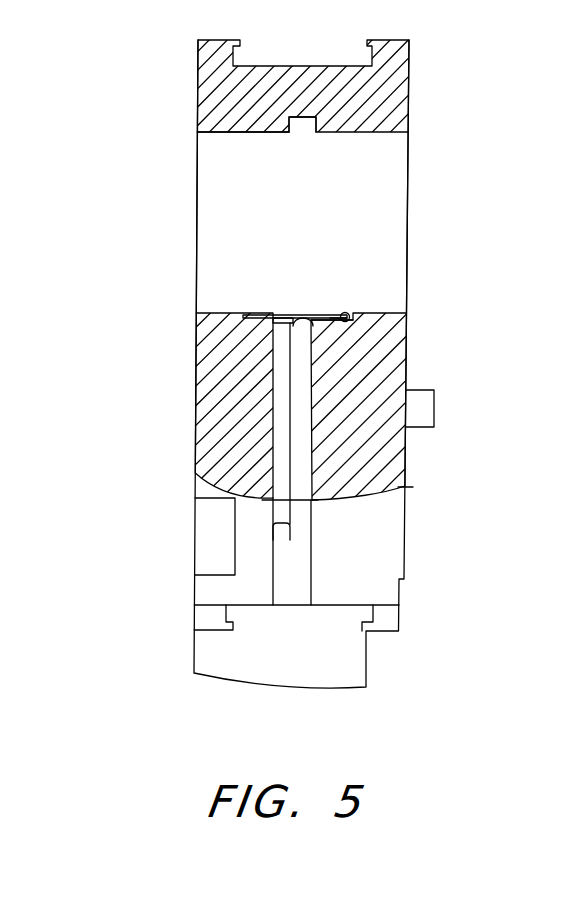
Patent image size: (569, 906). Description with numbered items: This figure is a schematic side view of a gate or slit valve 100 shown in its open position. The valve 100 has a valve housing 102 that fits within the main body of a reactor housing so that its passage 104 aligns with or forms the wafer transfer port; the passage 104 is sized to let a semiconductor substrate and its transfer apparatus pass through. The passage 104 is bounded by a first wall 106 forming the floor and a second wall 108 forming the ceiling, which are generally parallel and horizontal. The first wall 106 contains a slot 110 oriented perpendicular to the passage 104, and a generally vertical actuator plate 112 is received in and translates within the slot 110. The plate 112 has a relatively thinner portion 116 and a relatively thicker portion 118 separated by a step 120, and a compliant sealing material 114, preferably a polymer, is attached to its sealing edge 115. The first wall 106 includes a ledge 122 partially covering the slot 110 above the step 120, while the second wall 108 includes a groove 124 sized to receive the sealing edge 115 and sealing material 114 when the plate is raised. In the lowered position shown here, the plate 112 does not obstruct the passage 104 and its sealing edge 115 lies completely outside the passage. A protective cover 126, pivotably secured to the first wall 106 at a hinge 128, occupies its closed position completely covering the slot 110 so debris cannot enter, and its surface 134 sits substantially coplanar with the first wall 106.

The slit valve 100 is at (90, 117).
The valve housing 102 is at (411, 100).
The passage 104 is at (362, 183).
The first wall 106 is at (388, 313).
The second wall 108 is at (212, 133).
The slot 110 is at (282, 402).
The actuator plate 112 is at (320, 524).
The compliant sealing material 114 is at (285, 303).
The sealing edge 115 is at (310, 332).
The relatively thinner portion 116 is at (303, 433).
The relatively thicker portion 118 is at (295, 572).
The step 120 is at (282, 523).
The ledge 122 is at (235, 313).
The groove 124 is at (302, 132).
The protective cover 126 is at (278, 315).
The hinge 128 is at (345, 313).
The surface 134 is at (324, 313).